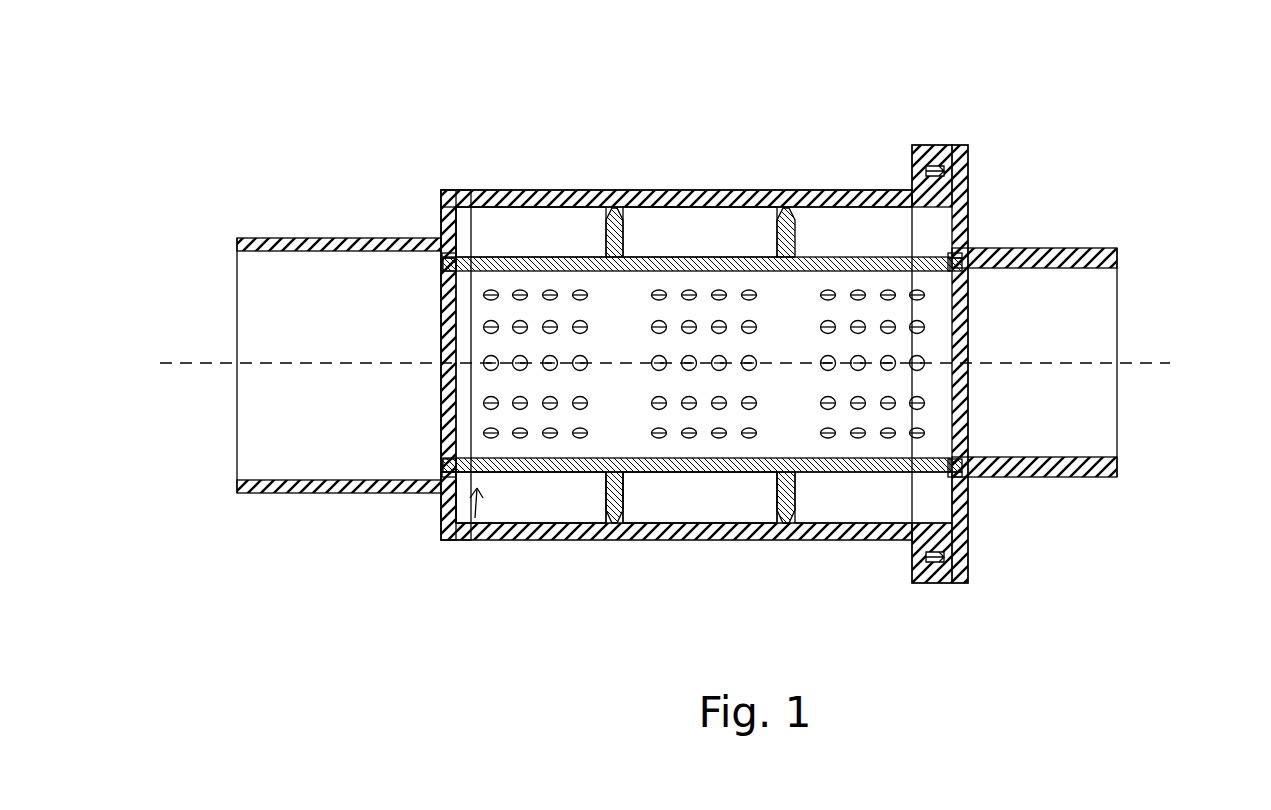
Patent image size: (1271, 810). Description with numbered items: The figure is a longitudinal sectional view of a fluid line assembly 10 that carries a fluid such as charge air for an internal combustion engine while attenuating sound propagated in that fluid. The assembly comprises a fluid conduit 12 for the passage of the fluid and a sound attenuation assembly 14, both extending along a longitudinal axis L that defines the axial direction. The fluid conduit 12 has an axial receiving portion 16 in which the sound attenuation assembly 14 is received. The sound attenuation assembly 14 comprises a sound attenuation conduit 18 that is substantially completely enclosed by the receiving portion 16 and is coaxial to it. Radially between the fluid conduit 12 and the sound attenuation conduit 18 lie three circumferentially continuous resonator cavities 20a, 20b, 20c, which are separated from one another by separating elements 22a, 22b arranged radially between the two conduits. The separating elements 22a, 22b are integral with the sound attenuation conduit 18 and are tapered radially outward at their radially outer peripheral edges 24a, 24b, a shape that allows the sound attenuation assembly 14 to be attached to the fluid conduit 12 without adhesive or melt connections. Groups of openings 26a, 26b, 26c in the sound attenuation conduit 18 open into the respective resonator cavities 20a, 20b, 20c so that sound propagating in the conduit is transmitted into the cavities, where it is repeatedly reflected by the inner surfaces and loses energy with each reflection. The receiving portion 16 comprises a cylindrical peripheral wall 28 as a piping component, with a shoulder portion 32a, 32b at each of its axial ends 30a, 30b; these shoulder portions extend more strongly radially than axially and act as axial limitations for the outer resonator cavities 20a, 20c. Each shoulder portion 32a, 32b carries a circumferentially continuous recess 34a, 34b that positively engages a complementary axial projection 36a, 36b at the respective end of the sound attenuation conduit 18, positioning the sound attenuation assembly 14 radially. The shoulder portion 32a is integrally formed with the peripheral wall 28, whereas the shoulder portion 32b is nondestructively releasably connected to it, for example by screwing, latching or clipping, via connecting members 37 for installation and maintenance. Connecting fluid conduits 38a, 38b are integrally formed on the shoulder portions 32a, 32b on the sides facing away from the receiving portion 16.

The fluid line assembly 10 is at (1183, 78).
The fluid conduit 12 is at (691, 342).
The sound attenuation assembly 14 is at (463, 543).
The axial receiving portion 16 is at (530, 187).
The sound attenuation conduit 18 is at (745, 478).
The resonator cavity 20a is at (552, 511).
The resonator cavity 20b is at (720, 511).
The resonator cavity 20c is at (888, 511).
The separating element 22a is at (612, 212).
The separating element 22b is at (810, 190).
The radially outer peripheral edge 24a is at (630, 190).
The radially outer peripheral edge 24b is at (770, 190).
The openings 26a is at (520, 290).
The openings 26b is at (659, 290).
The openings 26c is at (858, 290).
The peripheral wall 28 is at (740, 190).
The axial end 30a is at (402, 180).
The axial end 30b is at (985, 165).
The shoulder portion 32a is at (440, 210).
The shoulder portion 32b is at (968, 222).
The recess 34a is at (447, 470).
The recess 34b is at (980, 477).
The projection 36a is at (445, 500).
The projection 36b is at (970, 480).
The connecting members 37 is at (942, 145).
The connecting fluid conduit 38a is at (238, 492).
The connecting fluid conduit 38b is at (1118, 478).
The longitudinal axis L is at (1165, 361).